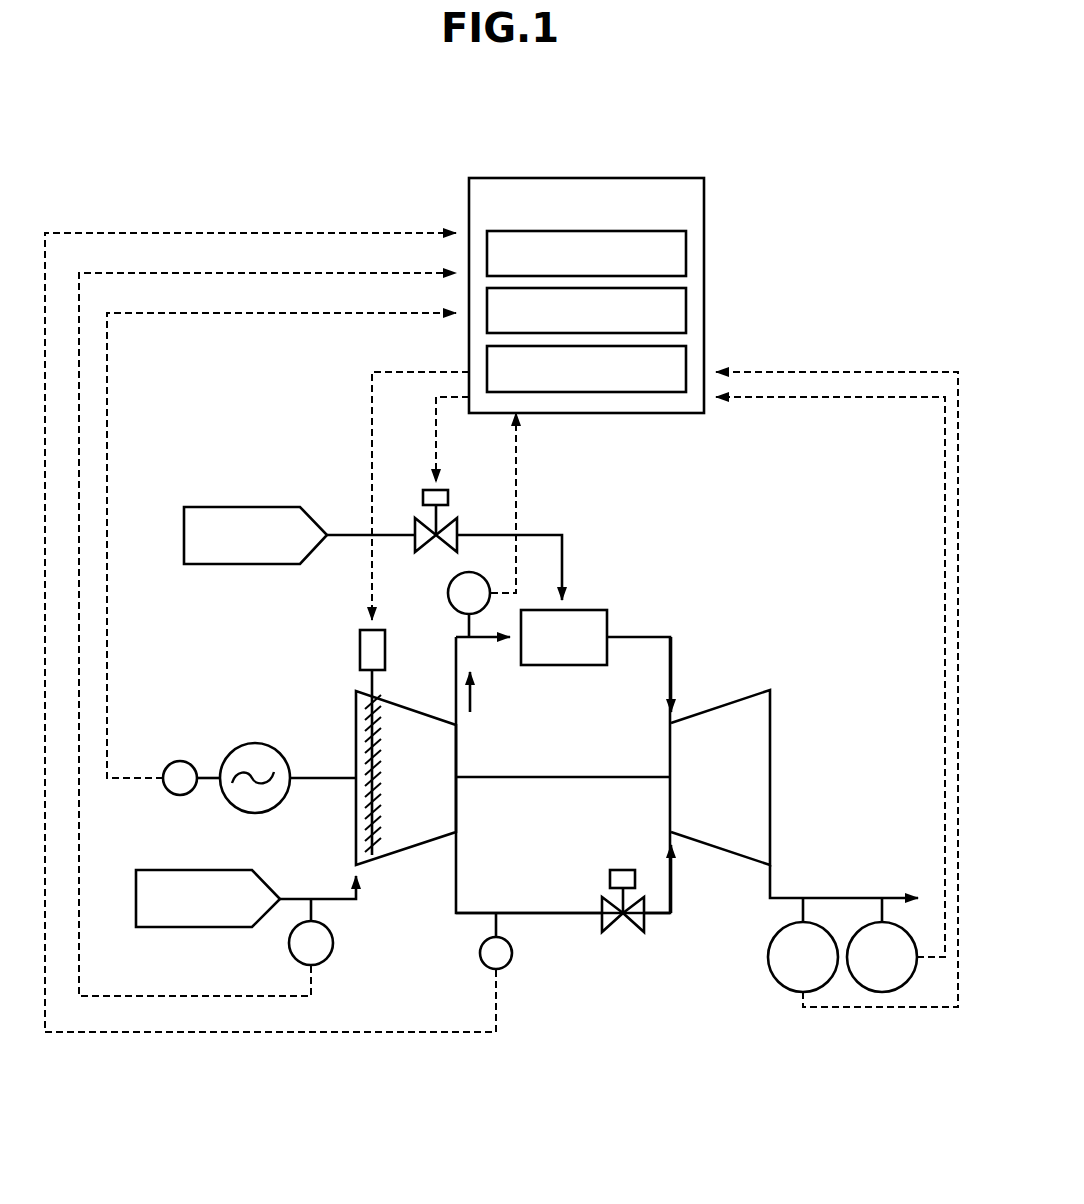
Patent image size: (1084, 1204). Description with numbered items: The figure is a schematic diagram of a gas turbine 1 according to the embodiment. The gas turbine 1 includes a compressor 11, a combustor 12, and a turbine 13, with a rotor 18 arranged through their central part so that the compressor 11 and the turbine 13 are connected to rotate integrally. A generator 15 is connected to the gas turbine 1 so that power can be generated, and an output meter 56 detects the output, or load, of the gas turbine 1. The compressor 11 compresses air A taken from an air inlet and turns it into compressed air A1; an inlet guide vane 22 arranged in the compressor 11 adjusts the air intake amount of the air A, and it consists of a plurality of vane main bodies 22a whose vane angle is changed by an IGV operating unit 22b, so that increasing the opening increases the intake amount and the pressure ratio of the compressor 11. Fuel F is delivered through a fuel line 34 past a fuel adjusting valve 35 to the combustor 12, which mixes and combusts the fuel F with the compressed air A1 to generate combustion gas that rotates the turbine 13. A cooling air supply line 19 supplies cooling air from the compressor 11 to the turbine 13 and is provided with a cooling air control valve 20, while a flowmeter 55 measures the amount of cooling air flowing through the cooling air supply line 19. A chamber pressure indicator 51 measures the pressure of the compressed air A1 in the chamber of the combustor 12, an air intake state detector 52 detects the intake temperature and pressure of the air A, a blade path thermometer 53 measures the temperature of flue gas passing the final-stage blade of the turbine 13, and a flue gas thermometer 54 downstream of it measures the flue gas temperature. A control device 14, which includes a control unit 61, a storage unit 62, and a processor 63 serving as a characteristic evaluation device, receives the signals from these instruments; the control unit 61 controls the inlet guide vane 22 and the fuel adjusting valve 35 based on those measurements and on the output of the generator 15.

The gas turbine 1 is at (620, 142).
The compressor 11 is at (403, 850).
The combustor 12 is at (592, 609).
The turbine 13 is at (725, 858).
The control device 14 is at (503, 178).
The generator 15 is at (259, 743).
The rotor 18 is at (562, 780).
The cooling air supply line 19 is at (570, 924).
The cooling air control valve 20 is at (624, 932).
The inlet guide vane 22 is at (372, 737).
The vane main bodies 22a is at (378, 760).
The IGV operating unit 22b is at (386, 641).
The fuel line 34 is at (348, 534).
The fuel adjusting valve 35 is at (459, 527).
The chamber pressure indicator 51 is at (447, 594).
The air intake state detector 52 is at (334, 946).
The blade path thermometer 53 is at (815, 990).
The flue gas thermometer 54 is at (893, 990).
The flowmeter 55 is at (479, 957).
The output meter 56 is at (180, 761).
The control unit 61 is at (686, 250).
The storage unit 62 is at (686, 306).
The processor 63 is at (686, 370).
The air A is at (136, 899).
The fuel F is at (184, 537).
The compressed air A1 is at (470, 692).